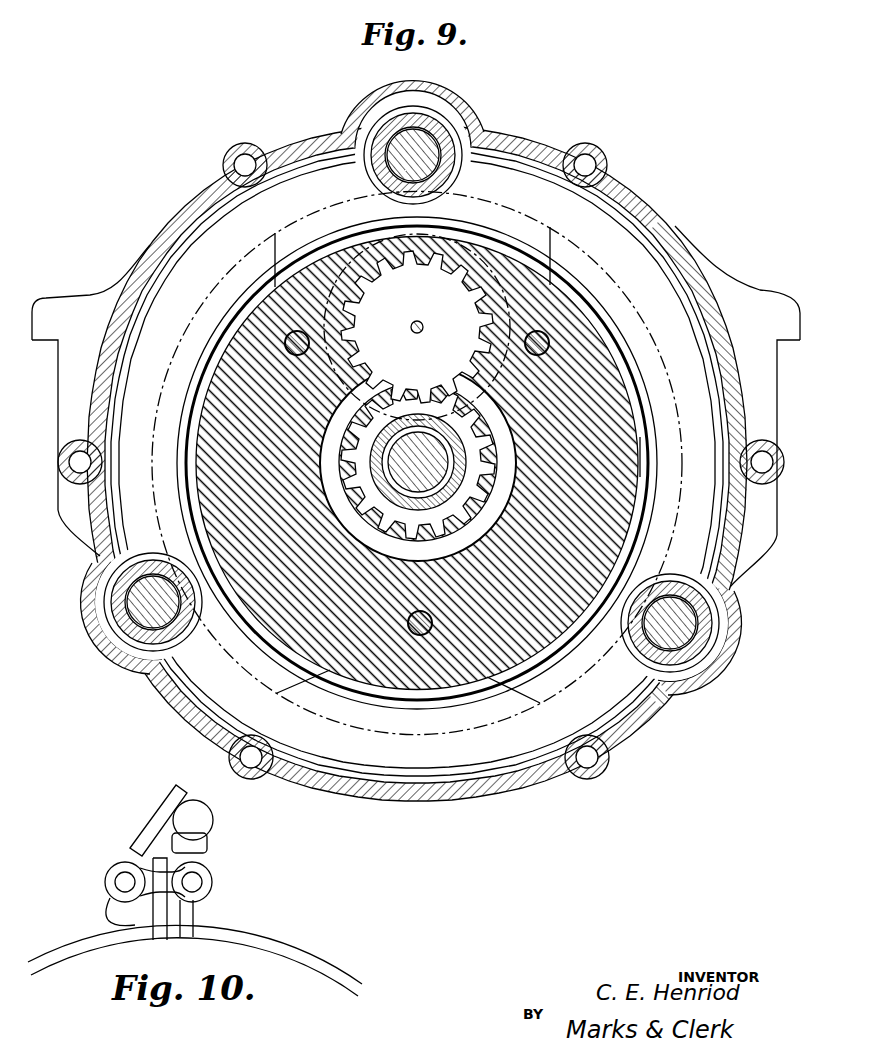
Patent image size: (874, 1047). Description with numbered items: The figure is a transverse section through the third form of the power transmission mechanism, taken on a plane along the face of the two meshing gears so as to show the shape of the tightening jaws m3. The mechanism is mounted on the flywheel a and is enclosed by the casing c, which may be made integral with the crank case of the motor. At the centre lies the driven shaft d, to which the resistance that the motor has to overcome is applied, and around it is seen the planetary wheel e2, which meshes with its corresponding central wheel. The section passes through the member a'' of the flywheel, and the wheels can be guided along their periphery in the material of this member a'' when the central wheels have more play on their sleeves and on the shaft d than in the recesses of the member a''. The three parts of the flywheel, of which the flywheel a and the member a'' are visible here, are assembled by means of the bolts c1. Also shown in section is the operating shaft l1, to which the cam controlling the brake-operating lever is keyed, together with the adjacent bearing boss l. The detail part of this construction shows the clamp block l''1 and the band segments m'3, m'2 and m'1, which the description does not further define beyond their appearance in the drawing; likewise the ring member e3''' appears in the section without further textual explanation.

In FIG. 9, the flywheel a is at (416, 380).
In FIG. 9, the casing c is at (520, 142).
In FIG. 9, the tightening jaws m3 is at (578, 178).
In FIG. 9, the ring member e3''' is at (456, 519).
In FIG. 9, the flywheel member a'' is at (417, 463).
In FIG. 9, the driven shaft d is at (395, 450).
In FIG. 9, the planetary wheel e2 is at (473, 303).
In FIG. 9, the bolts c1 is at (284, 343).
In FIG. 9, the bearing boss l is at (425, 132).
In FIG. 10, the bearing boss l is at (201, 808).
In FIG. 9, the operating shaft l1 is at (690, 623).
In FIG. 10, the clamp block l''1 is at (213, 850).
In FIG. 10, the band segment m'3 is at (195, 954).
In FIG. 10, the band segment m'2 is at (220, 960).
In FIG. 10, the band segment m'1 is at (308, 904).